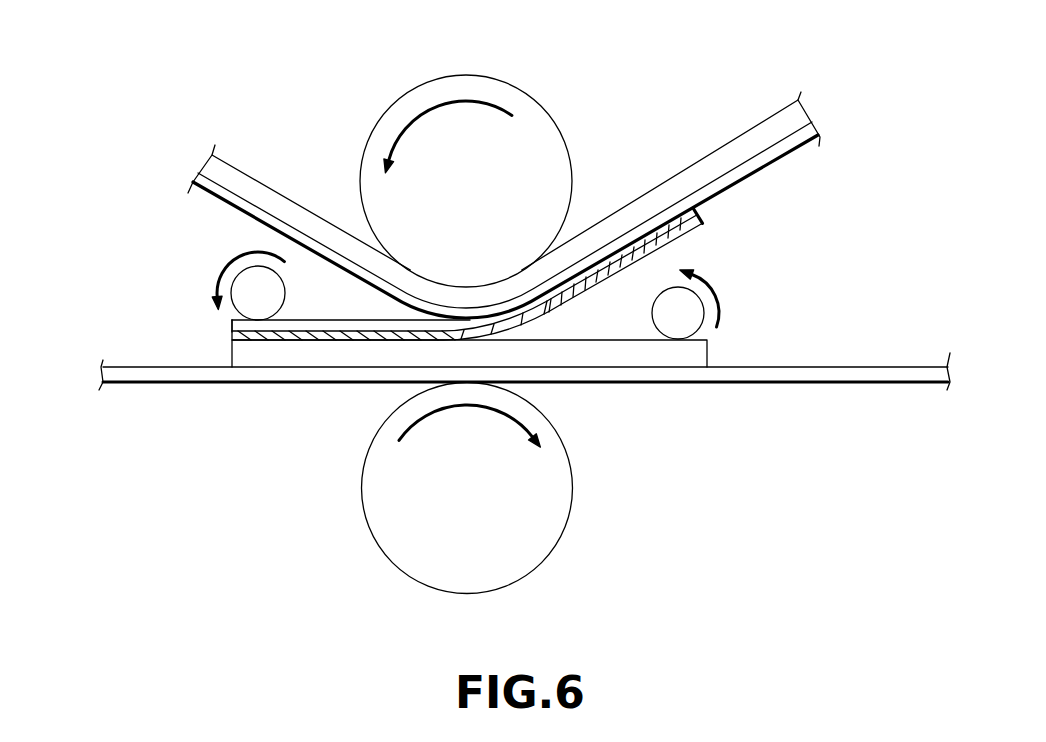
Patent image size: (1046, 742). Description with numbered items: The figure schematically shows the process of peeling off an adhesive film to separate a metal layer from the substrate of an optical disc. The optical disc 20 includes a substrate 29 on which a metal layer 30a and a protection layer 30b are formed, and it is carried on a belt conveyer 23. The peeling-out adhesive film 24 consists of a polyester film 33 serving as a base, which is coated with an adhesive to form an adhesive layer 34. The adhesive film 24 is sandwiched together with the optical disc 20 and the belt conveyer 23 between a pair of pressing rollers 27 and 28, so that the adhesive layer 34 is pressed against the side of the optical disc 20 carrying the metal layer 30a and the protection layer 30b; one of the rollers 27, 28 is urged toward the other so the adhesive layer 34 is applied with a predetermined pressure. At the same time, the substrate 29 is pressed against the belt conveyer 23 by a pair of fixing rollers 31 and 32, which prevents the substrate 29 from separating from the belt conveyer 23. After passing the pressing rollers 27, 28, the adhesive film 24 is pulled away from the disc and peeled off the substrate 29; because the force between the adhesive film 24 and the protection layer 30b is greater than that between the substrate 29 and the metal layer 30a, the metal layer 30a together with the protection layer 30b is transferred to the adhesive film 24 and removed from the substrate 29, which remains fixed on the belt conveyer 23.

The optical disc 20 is at (221, 336).
The belt conveyer 23 is at (812, 373).
The peeling-out adhesive film 24 is at (504, 179).
The pressing roller 27 is at (538, 140).
The pressing roller 28 is at (557, 507).
The substrate 29 is at (702, 356).
The metal layer 30a is at (700, 228).
The protection layer 30b is at (696, 209).
The fixing roller 31 is at (266, 302).
The fixing roller 32 is at (667, 322).
The polyester film 33 is at (763, 137).
The adhesive layer 34 is at (741, 180).